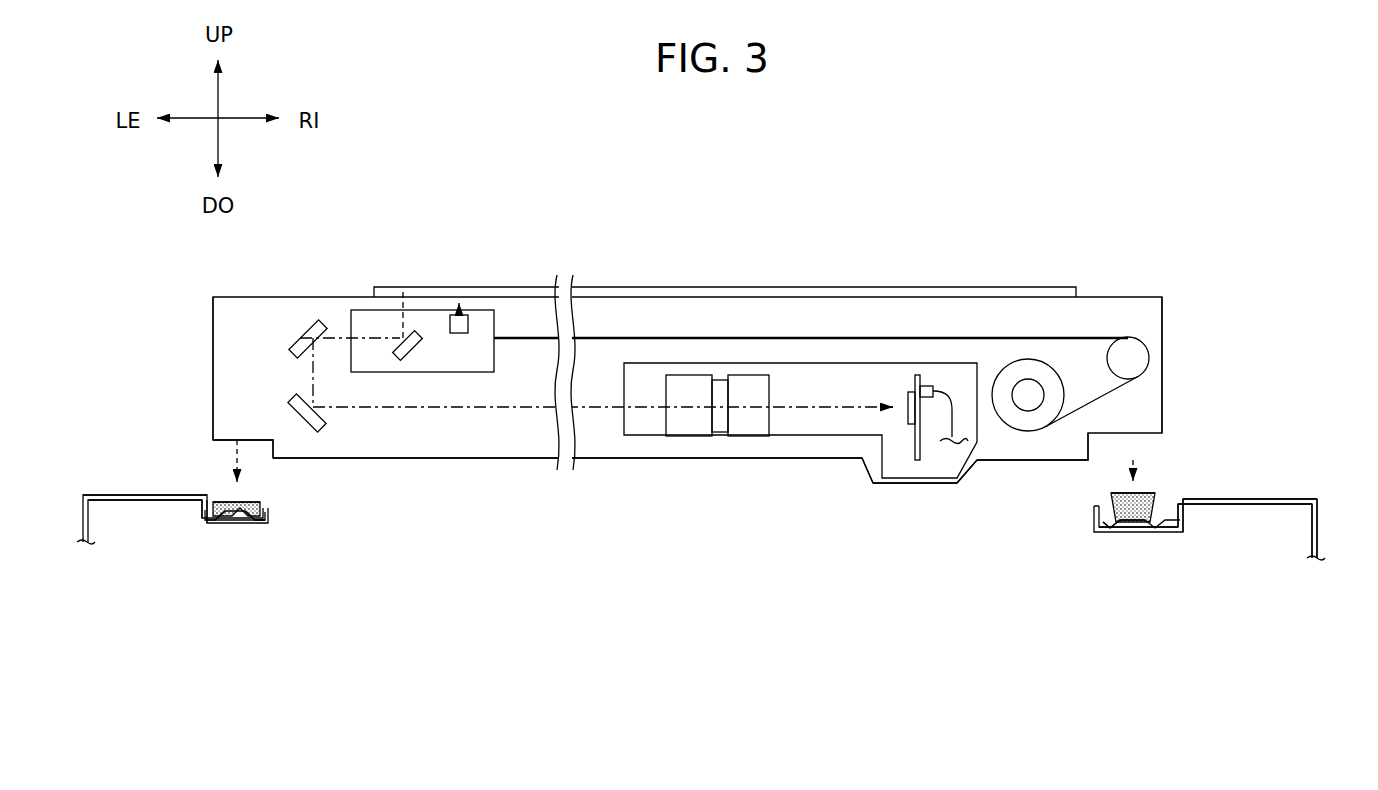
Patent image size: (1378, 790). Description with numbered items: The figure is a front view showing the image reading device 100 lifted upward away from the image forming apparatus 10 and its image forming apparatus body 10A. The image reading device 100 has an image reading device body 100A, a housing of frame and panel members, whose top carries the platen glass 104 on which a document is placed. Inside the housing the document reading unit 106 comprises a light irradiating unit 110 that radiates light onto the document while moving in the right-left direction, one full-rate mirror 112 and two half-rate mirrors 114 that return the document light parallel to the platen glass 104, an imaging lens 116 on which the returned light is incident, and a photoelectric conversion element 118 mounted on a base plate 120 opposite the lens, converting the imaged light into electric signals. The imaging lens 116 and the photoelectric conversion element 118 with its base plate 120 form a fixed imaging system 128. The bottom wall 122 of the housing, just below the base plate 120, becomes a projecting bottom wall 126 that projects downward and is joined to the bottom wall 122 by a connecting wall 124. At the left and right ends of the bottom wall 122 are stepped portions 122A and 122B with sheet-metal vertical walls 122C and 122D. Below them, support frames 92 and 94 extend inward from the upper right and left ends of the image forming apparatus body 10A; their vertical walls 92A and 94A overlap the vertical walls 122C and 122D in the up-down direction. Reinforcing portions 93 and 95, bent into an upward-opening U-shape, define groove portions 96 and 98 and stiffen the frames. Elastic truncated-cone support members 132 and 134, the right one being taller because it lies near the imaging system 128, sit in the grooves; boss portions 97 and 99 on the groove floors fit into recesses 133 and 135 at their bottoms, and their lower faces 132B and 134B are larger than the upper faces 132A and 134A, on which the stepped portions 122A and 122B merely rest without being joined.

The image forming apparatus 10 is at (1186, 206).
The image forming apparatus body 10A is at (1320, 500).
The image reading device 100 is at (1177, 265).
The image reading device body 100A is at (213, 317).
The platen glass 104 is at (524, 286).
The document reading unit 106 is at (1178, 352).
The light irradiating unit 110 is at (468, 325).
The full-rate mirror 112 is at (406, 347).
The half-rate mirrors 114 is at (298, 347).
The imaging lens 116 is at (692, 385).
The photoelectric conversion element 118 is at (907, 396).
The base plate 120 is at (933, 388).
The bottom wall 122 is at (437, 460).
The stepped portion 122A is at (228, 446).
The stepped portion 122B is at (1160, 440).
The vertical wall 122C is at (266, 450).
The vertical wall 122D is at (1090, 448).
The connecting wall 124 is at (866, 470).
The projecting bottom wall 126 is at (900, 484).
The imaging system 128 is at (836, 351).
The support frame 92 is at (113, 502).
The vertical wall 92A is at (198, 503).
The reinforcing portion 93 is at (290, 537).
The support frame 94 is at (1273, 504).
The vertical wall 94A is at (1183, 510).
The reinforcing portion 95 is at (1088, 551).
The groove portion 96 is at (195, 520).
The boss portion 97 is at (223, 527).
The groove portion 98 is at (1186, 533).
The boss portion 99 is at (1112, 525).
The support member 132 is at (262, 507).
The upper face 132A is at (215, 498).
The lower face 132B is at (263, 530).
The recess 133 is at (237, 528).
The support member 134 is at (1152, 492).
The upper face 134A is at (1112, 492).
The lower face 134B is at (1154, 528).
The recess 135 is at (1128, 524).